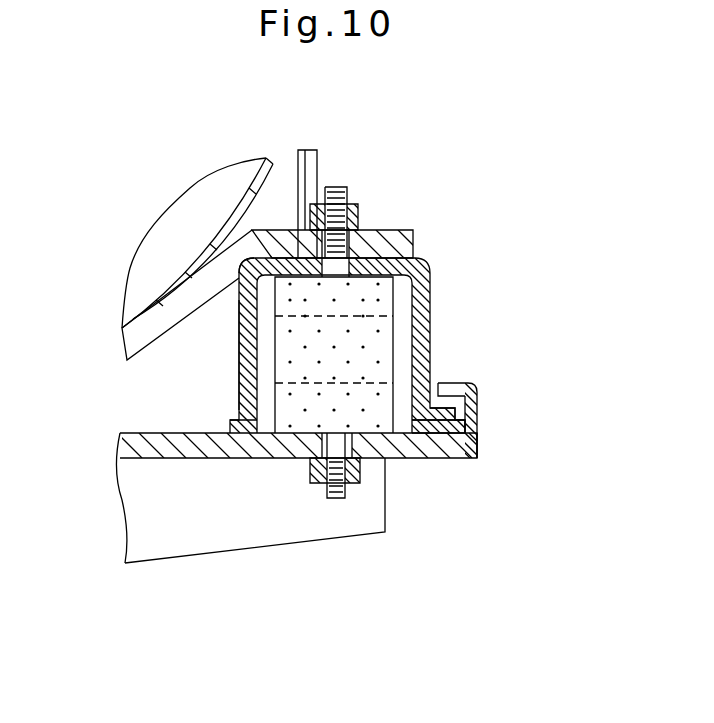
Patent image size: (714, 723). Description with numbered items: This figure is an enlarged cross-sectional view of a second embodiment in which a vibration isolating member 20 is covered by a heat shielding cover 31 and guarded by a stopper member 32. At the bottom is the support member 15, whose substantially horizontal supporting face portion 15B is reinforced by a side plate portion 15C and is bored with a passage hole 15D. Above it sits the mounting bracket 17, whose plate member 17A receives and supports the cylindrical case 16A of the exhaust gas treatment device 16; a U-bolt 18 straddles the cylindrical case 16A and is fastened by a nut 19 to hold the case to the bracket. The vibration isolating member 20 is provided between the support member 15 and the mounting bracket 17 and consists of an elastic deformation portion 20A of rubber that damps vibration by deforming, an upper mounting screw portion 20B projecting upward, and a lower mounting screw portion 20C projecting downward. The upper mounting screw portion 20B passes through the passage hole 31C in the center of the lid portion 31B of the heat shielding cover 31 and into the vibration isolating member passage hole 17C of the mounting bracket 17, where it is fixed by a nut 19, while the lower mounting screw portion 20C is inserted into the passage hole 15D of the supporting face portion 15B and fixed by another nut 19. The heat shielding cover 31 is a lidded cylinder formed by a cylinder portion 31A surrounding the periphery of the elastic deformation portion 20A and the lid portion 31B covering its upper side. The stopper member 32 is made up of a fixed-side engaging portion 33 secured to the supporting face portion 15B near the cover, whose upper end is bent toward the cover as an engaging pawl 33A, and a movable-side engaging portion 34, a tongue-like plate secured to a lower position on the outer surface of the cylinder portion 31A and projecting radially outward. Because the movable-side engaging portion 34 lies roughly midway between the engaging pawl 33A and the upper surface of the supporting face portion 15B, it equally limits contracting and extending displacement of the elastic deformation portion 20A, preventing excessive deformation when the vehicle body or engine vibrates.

The support member 15 is at (137, 436).
The supporting face portion 15B is at (433, 450).
The side plate portion 15C is at (140, 509).
The passage hole 15D is at (320, 478).
The exhaust gas treatment device 16 is at (182, 266).
The cylindrical case 16A is at (165, 275).
The mounting bracket 17 is at (403, 247).
The plate member 17A is at (127, 325).
The vibration isolating member passage hole 17C is at (345, 203).
The U-bolt 18 is at (305, 152).
The nut 19 is at (360, 217).
The vibration isolating member 20 is at (368, 355).
The elastic deformation portion 20A is at (380, 312).
The upper mounting screw portion 20B is at (332, 187).
The lower mounting screw portion 20C is at (335, 502).
The heat shielding cover 31 is at (427, 273).
The cylinder portion 31A is at (241, 378).
The lid portion 31B is at (256, 243).
The passage hole 31C is at (305, 225).
The stopper member 32 is at (480, 423).
The fixed-side engaging portion 33 is at (445, 418).
The engaging pawl 33A is at (452, 383).
The movable-side engaging portion 34 is at (465, 458).